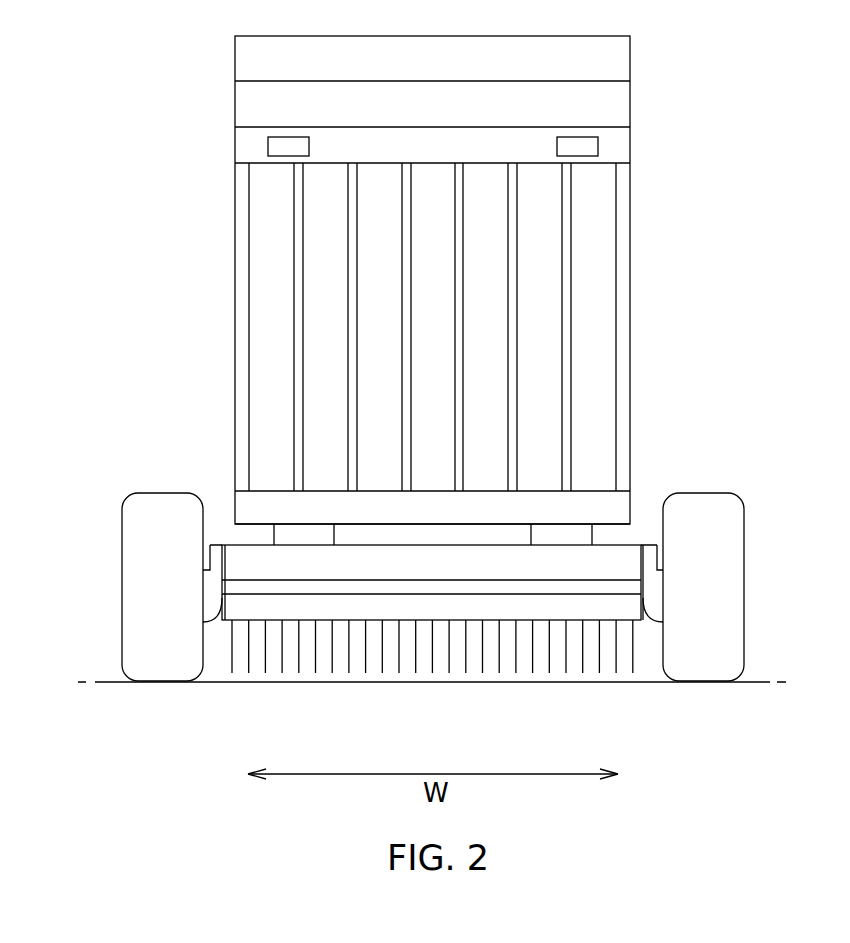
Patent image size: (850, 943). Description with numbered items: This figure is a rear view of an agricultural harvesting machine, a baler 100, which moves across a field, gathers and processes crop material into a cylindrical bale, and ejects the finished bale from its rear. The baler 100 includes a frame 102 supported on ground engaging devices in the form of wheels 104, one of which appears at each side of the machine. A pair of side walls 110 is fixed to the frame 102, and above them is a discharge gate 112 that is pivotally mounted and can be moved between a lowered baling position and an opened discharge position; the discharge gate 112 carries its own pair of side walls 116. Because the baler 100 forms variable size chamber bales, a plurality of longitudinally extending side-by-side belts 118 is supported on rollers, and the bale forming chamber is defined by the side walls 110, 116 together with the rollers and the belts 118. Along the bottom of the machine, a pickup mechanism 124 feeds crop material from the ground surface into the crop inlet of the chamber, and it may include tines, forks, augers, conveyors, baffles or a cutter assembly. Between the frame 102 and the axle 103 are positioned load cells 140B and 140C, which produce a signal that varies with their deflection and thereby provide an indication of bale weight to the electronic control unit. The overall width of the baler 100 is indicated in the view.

The baler 100 is at (705, 209).
The frame 102 is at (628, 504).
The axle 103 is at (456, 572).
The wheels 104 is at (141, 498).
The side walls 110 is at (233, 297).
The discharge gate 112 is at (595, 88).
The side walls 116 is at (233, 103).
The belts 118 is at (550, 356).
The pickup mechanism 124 is at (316, 663).
The load cell 140B is at (314, 541).
The load cell 140C is at (552, 540).